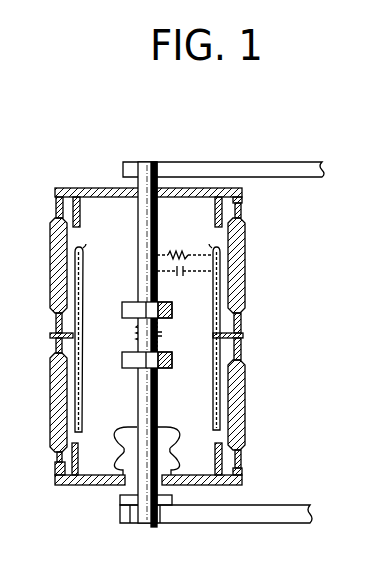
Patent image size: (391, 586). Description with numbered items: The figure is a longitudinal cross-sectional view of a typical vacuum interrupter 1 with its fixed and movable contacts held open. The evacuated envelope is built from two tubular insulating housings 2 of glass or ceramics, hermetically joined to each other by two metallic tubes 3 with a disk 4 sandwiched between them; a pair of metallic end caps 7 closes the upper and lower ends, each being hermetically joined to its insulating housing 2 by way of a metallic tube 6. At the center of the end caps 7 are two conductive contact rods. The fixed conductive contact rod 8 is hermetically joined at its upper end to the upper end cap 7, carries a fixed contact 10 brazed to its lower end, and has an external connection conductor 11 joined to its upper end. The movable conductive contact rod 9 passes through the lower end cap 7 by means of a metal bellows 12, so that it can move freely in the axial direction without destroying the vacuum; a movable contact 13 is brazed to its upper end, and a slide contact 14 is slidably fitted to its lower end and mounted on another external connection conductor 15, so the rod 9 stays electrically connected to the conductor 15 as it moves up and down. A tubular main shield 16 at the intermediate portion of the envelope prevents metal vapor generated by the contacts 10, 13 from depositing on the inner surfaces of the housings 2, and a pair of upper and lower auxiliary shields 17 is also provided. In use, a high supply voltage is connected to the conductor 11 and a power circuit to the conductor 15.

The vacuum interrupter 1 is at (86, 188).
The tubular insulating housing 2 is at (244, 243).
The metallic tube 3 is at (244, 322).
The disk 4 is at (226, 340).
The metallic tube 6 is at (54, 207).
The metallic end cap 7 is at (146, 332).
The fixed conductive contact rod 8 is at (147, 163).
The movable conductive contact rod 9 is at (144, 527).
The fixed contact 10 is at (128, 303).
The external connection conductor 11 is at (276, 162).
The metal bellows 12 is at (170, 430).
The movable contact 13 is at (126, 355).
The slide contact 14 is at (120, 505).
The external connection conductor 15 is at (265, 525).
The tubular main shield 16 is at (213, 306).
The auxiliary shield 17 is at (237, 215).